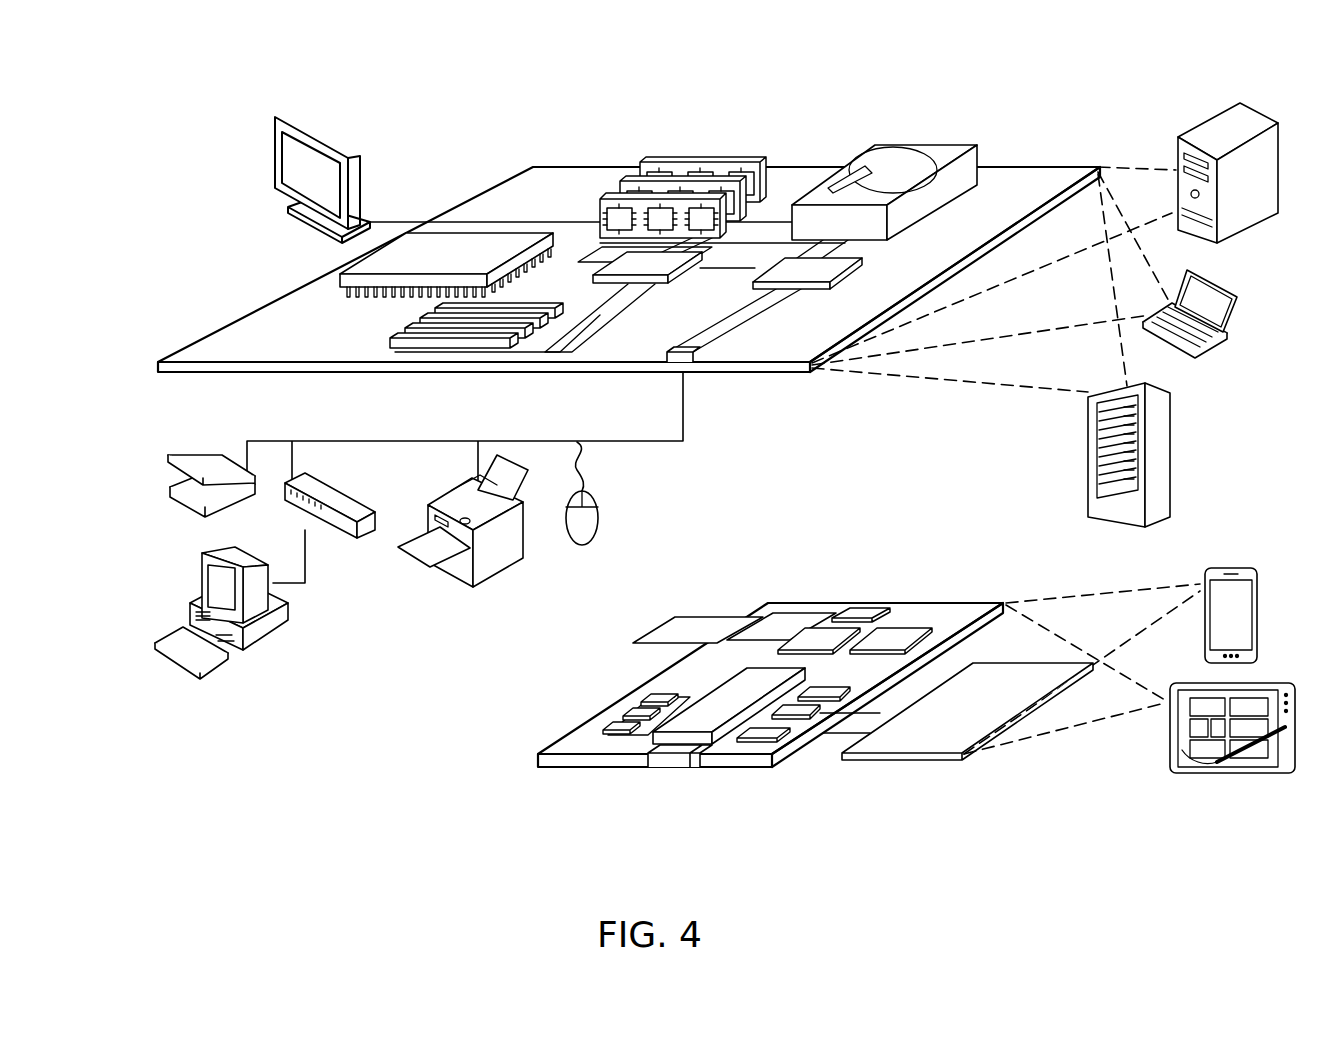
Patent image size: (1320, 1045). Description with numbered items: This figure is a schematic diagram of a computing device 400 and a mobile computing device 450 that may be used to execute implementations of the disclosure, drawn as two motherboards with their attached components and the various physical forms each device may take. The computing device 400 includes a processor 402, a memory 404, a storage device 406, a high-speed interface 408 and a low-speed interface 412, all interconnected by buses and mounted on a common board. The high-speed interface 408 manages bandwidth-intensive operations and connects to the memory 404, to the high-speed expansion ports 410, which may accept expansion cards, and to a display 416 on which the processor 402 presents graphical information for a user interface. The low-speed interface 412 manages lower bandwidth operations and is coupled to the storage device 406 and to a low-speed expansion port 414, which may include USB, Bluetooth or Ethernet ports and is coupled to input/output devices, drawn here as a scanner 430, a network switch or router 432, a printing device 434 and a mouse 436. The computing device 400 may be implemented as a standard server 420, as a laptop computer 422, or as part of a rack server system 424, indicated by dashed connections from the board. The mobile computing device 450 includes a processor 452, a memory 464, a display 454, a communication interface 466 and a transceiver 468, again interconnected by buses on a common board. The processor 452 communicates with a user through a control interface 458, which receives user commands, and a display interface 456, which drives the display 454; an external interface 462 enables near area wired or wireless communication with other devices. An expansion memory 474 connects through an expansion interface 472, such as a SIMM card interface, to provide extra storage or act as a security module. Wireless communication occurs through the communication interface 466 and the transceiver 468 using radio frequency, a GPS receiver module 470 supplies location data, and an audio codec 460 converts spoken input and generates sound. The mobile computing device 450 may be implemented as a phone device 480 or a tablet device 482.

The computing device 400 is at (420, 71).
The processor 402 is at (338, 283).
The memory 404 is at (652, 168).
The storage device 406 is at (870, 152).
The high-speed interface 408 is at (615, 262).
The high-speed expansion ports 410 is at (407, 333).
The low-speed interface 412 is at (792, 268).
The low-speed expansion port 414 is at (698, 363).
The display 416 is at (278, 119).
The standard server 420 is at (1173, 155).
The laptop computer 422 is at (1232, 295).
The rack server system 424 is at (1088, 478).
The scanner 430 is at (167, 487).
The network hub 432 is at (342, 538).
The printer 434 is at (500, 572).
The mouse 436 is at (607, 522).
The mobile computing device 450 is at (517, 762).
The processor 452 is at (705, 727).
The display 454 is at (930, 742).
The display interface 456 is at (773, 740).
The control interface 458 is at (800, 713).
The audio codec 460 is at (827, 690).
The external interface 462 is at (673, 755).
The memory 464 is at (620, 720).
The communication interface 466 is at (825, 638).
The transceiver 468 is at (893, 638).
The GPS receiver module 470 is at (858, 612).
The expansion interface 472 is at (753, 616).
The expansion memory 474 is at (682, 617).
The phone device 480 is at (1220, 568).
The tablet device 482 is at (1170, 727).